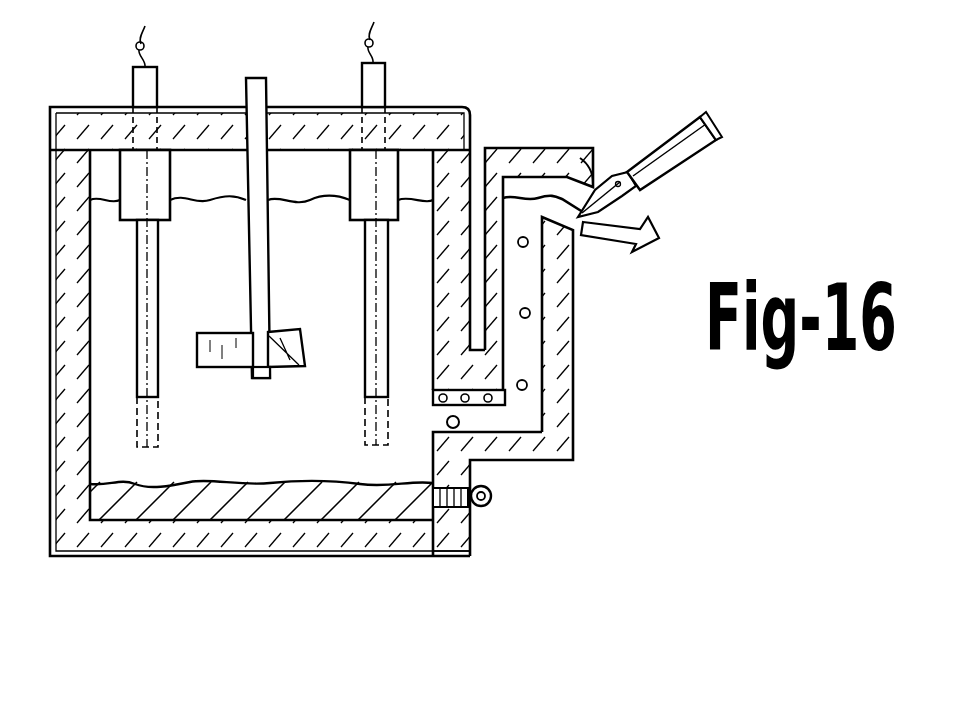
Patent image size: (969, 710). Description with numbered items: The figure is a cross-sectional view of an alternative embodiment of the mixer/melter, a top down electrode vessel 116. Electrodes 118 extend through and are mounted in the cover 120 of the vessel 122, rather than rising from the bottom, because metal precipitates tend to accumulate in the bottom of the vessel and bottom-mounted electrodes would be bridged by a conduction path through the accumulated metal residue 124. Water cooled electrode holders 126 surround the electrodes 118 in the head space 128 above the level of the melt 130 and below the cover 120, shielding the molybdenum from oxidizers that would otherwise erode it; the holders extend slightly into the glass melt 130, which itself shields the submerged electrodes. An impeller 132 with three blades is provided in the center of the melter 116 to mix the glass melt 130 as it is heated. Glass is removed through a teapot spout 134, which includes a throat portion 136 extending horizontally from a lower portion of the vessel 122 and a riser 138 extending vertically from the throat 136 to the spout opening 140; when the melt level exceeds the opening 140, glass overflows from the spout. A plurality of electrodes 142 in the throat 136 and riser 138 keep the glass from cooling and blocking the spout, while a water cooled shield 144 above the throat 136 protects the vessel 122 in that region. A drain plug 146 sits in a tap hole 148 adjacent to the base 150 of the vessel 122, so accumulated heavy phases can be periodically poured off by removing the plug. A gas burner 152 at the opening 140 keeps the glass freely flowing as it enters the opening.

The top down electrode vessel 116 is at (463, 89).
The electrodes 118 is at (155, 72).
The cover 120 is at (472, 120).
The vessel 122 is at (84, 557).
The accumulated metal residue 124 is at (208, 503).
The water cooled electrode holders 126 is at (172, 172).
The head space 128 is at (285, 153).
The glass melt 130 is at (310, 194).
The impeller 132 is at (212, 333).
The teapot spout 134 is at (578, 434).
The throat portion 136 is at (493, 418).
The riser 138 is at (527, 333).
The spout opening 140 is at (594, 156).
The electrodes 142 is at (530, 388).
The water cooled shield 144 is at (443, 407).
The drain plug 146 is at (490, 508).
The tap hole 148 is at (453, 510).
The base 150 is at (475, 545).
The gas burner 152 is at (661, 180).